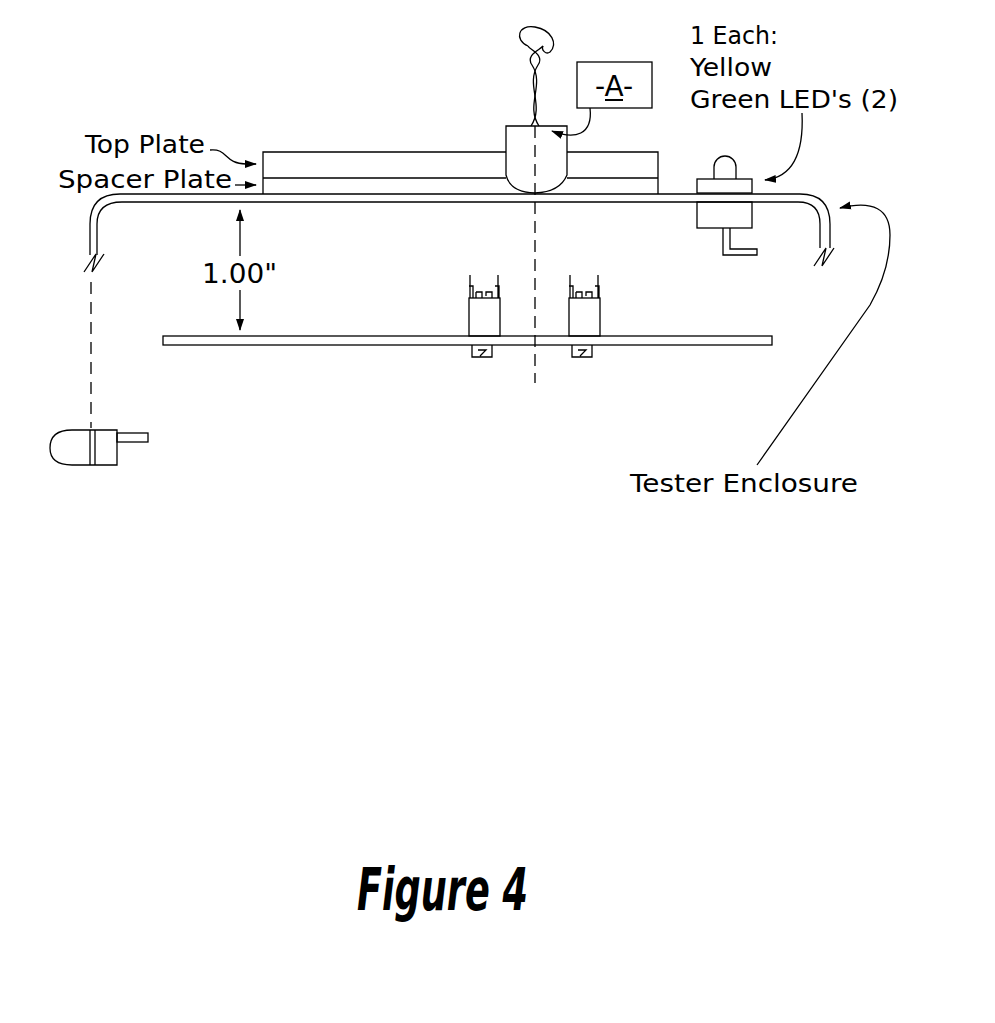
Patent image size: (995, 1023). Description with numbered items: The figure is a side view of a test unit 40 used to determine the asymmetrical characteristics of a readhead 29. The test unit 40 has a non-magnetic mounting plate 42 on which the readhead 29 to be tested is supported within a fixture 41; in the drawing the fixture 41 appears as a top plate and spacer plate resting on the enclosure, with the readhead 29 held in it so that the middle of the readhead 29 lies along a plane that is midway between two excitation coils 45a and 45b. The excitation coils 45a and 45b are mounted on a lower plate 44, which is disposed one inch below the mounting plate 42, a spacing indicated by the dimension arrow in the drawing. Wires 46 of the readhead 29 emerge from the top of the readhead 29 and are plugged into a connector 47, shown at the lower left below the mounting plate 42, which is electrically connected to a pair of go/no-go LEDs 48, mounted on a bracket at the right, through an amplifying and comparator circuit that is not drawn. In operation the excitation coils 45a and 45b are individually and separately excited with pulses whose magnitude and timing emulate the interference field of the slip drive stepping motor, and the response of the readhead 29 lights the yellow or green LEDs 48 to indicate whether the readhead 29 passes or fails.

The test unit 40 is at (176, 116).
The fixture 41 is at (350, 160).
The readhead 29 is at (505, 135).
The wires 46 is at (557, 68).
The non-magnetic mounting plate 42 is at (90, 227).
The plate 44 is at (177, 336).
The excitation coil 45a is at (590, 322).
The excitation coil 45b is at (478, 315).
The connector 47 is at (74, 450).
The go/no go LEDs 48 is at (738, 216).